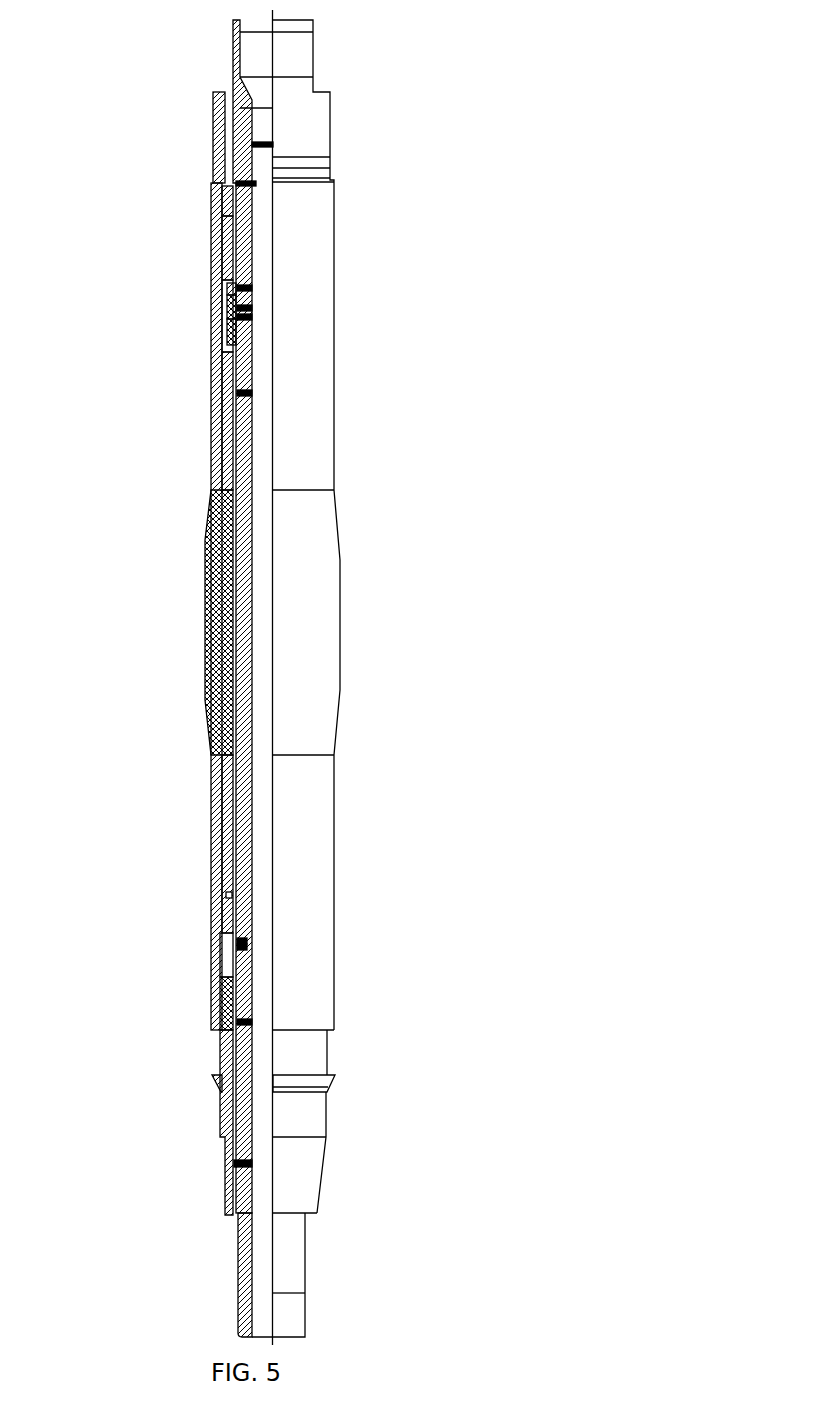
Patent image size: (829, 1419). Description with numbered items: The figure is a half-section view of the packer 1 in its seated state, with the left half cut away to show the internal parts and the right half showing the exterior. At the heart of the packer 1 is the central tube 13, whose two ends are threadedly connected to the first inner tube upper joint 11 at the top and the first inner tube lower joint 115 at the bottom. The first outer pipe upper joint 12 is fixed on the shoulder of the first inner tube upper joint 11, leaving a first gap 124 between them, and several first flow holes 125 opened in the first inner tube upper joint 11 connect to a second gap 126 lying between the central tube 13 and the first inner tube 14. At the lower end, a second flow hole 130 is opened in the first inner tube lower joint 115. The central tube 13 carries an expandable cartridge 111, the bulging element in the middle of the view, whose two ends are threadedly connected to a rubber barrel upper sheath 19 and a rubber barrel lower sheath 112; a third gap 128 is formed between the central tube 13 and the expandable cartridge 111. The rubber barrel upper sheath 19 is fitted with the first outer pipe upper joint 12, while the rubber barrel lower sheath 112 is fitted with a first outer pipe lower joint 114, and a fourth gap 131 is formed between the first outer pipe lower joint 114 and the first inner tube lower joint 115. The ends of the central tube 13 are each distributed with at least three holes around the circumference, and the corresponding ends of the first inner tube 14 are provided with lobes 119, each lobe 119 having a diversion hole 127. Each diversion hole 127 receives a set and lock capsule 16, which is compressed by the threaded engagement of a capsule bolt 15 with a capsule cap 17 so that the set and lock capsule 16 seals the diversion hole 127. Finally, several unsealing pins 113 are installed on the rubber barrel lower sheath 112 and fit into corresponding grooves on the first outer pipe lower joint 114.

The packer 1 is at (106, 48).
The first inner tube upper joint 11 is at (235, 72).
The first outer pipe upper joint 12 is at (223, 112).
The central tube 13 is at (220, 190).
The first inner tube 14 is at (218, 227).
The capsule bolt 15 is at (235, 293).
The set and lock capsule 16 is at (234, 303).
The capsule cap 17 is at (235, 325).
The rubber barrel upper sheath 19 is at (231, 378).
The expandable cartridge 111 is at (206, 637).
The rubber barrel lower sheath 112 is at (211, 877).
The unsealing pin 113 is at (211, 1022).
The first outer pipe lower joint 114 is at (222, 1120).
The first inner tube lower joint 115 is at (240, 1232).
The lobe 119 is at (252, 308).
The first gap 124 is at (252, 143).
The first flow hole 125 is at (252, 183).
The second gap 126 is at (252, 288).
The diversion hole 127 is at (252, 317).
The third gap 128 is at (252, 485).
The second flow hole 130 is at (252, 1075).
The fourth gap 131 is at (235, 1167).